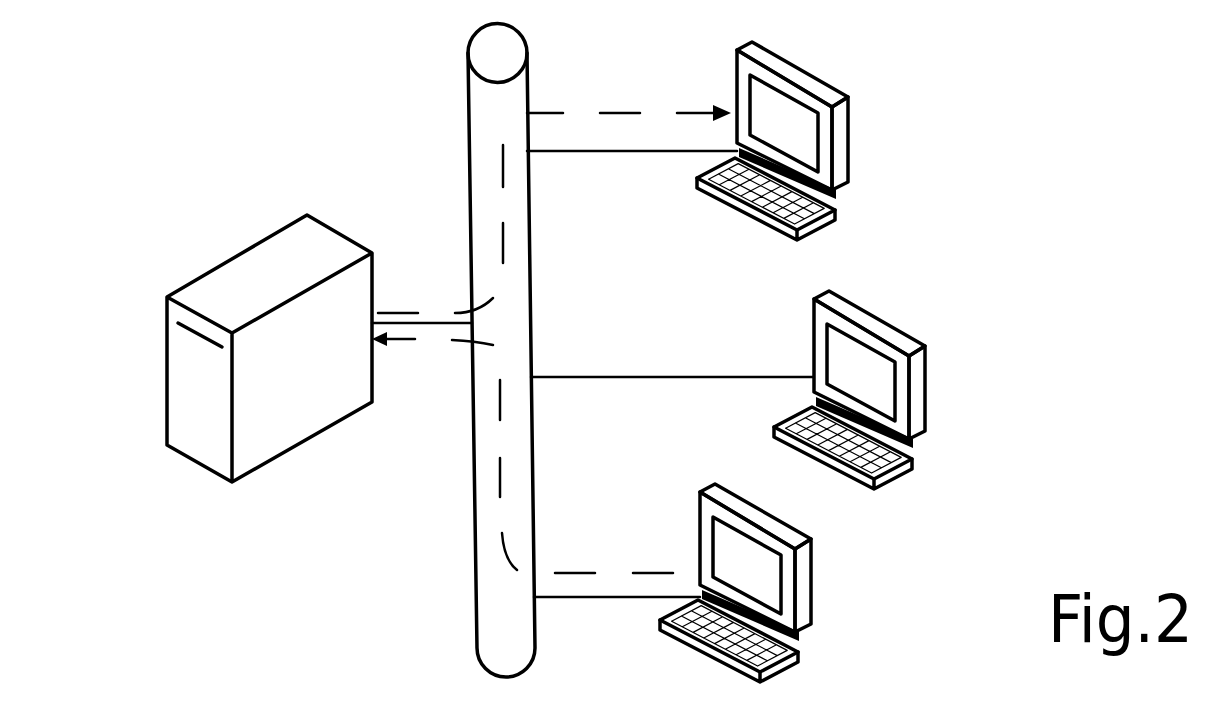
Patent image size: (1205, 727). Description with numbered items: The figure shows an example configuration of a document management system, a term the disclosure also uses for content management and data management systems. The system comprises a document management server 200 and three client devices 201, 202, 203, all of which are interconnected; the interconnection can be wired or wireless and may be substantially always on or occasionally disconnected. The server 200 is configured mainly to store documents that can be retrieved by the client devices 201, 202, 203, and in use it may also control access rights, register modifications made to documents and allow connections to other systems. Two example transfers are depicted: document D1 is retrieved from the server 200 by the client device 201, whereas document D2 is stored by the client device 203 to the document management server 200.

The document management server 200 is at (269, 348).
The client device 201 is at (823, 81).
The client device 202 is at (857, 304).
The client device 203 is at (815, 603).
The document D1 is at (432, 311).
The document D2 is at (624, 559).